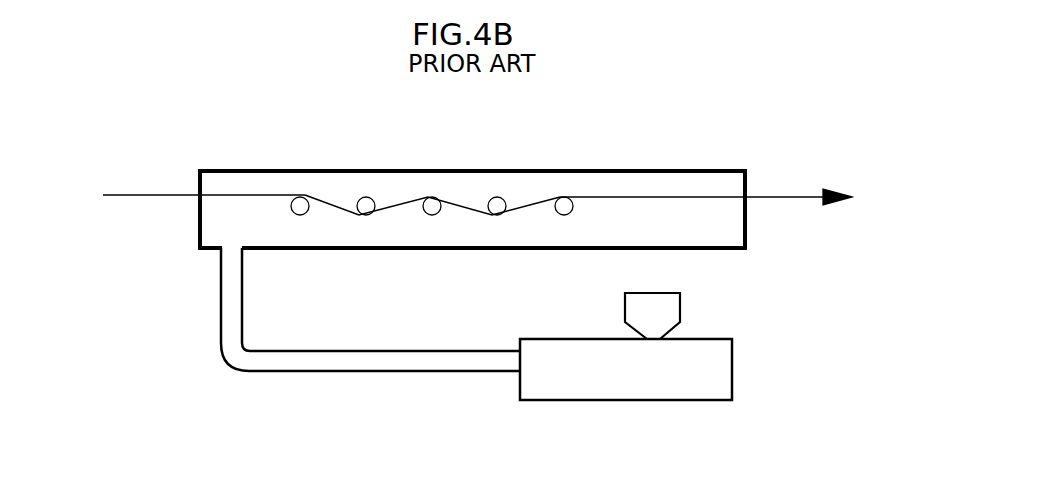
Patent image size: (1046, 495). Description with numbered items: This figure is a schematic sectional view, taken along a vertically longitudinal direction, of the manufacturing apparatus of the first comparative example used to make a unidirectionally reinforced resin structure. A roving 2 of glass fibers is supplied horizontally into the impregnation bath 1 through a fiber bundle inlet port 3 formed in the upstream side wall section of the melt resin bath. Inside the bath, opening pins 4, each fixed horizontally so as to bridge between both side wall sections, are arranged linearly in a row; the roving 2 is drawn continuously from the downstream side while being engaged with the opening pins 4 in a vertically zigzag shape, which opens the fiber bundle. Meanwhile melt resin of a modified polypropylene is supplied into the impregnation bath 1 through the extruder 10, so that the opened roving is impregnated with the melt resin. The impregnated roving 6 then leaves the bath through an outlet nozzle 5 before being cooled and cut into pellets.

The impregnation bath 1 is at (468, 164).
The roving 2 is at (142, 193).
The fiber bundle inlet port 3 is at (197, 195).
The opening pin 4 is at (350, 212).
The outlet nozzle 5 is at (750, 195).
The impregnated roving 6 is at (795, 197).
The extruder 10 is at (722, 348).